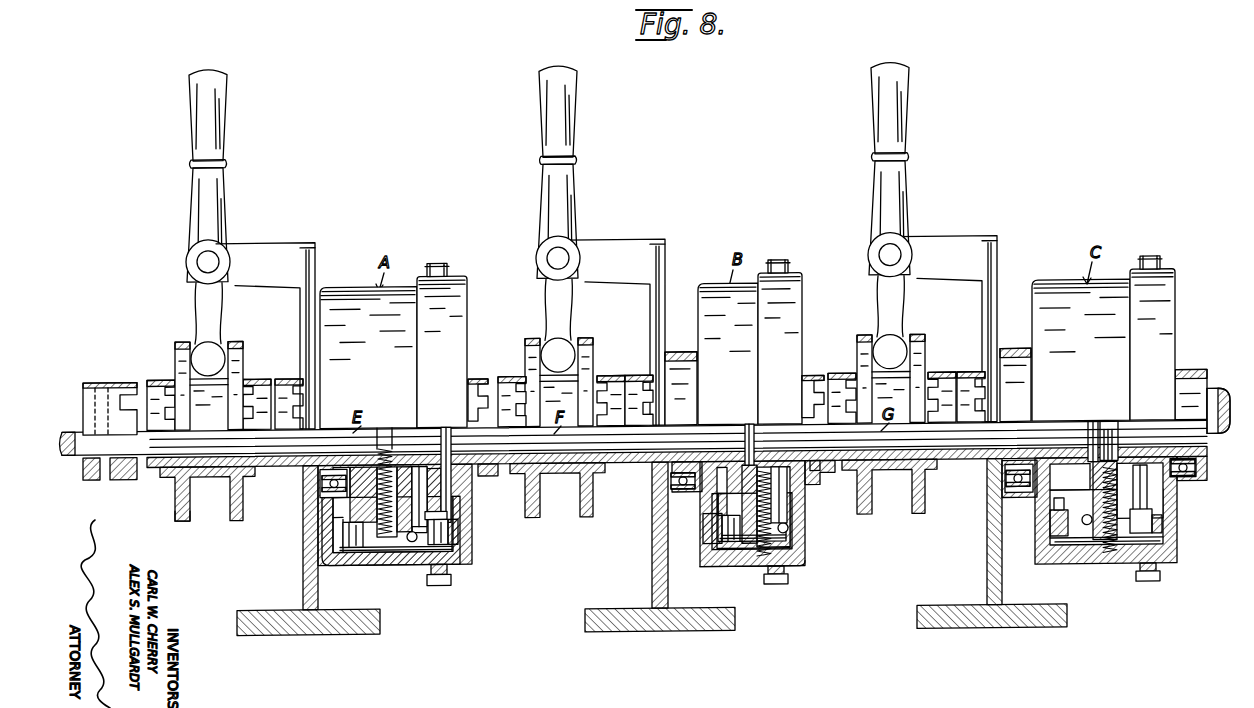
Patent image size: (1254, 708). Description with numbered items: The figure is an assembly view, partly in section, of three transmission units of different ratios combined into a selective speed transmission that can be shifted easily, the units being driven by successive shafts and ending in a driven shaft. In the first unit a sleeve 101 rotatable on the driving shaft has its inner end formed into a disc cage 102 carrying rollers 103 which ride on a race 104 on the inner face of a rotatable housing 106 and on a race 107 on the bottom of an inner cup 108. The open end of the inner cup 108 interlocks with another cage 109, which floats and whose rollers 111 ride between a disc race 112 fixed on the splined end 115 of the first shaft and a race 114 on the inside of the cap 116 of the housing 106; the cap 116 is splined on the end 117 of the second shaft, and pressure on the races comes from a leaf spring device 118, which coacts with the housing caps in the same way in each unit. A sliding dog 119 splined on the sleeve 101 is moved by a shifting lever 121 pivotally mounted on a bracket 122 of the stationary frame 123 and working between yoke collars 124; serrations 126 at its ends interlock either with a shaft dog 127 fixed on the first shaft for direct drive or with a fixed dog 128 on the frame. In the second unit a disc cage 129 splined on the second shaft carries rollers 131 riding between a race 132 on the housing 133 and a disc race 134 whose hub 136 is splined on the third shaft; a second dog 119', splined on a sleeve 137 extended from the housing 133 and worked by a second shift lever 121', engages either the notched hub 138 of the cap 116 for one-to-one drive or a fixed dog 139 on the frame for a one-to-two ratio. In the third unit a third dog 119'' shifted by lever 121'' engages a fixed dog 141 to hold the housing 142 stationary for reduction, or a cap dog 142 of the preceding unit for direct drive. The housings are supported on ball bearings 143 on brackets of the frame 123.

The sleeve 101 is at (222, 470).
The disc cage 102 is at (354, 574).
The rollers 103 is at (345, 530).
The race 104 is at (345, 540).
The rotatable housing 106 is at (382, 388).
The race 107 is at (384, 558).
The inner cup 108 is at (411, 558).
The cage 109 is at (441, 502).
The rollers 111 is at (453, 540).
The disc race 112 is at (441, 522).
The race 114 is at (459, 548).
The splined end 115 is at (399, 468).
The cap 116 is at (469, 286).
The end of second shaft 117 is at (449, 436).
The leaf spring device 118 is at (379, 470).
The sliding dog 119 is at (209, 385).
The second dog 119' is at (569, 382).
The third shifting dog 119'' is at (896, 378).
The shifting lever 121 is at (230, 223).
The second shift lever 121' is at (583, 219).
The third shift lever 121'' is at (923, 215).
The bracket 122 is at (307, 244).
The stationary frame 123 is at (304, 589).
The yoke collars 124 is at (212, 524).
The serrations or teeth 126 is at (263, 381).
The shaft dog 127 is at (111, 383).
The fixed dog 128 is at (287, 381).
The disc cage 129 is at (732, 557).
The rollers 131 is at (722, 550).
The race 132 is at (722, 540).
The housing 133 is at (738, 404).
The disc race 134 is at (752, 554).
The hub 136 is at (820, 474).
The sleeve 137 is at (602, 472).
The notched hub 138 is at (481, 382).
The fixed dog 139 is at (643, 380).
The fixed dog 141 is at (975, 380).
The housing 142 is at (813, 382).
The ball bearings 143 is at (323, 489).